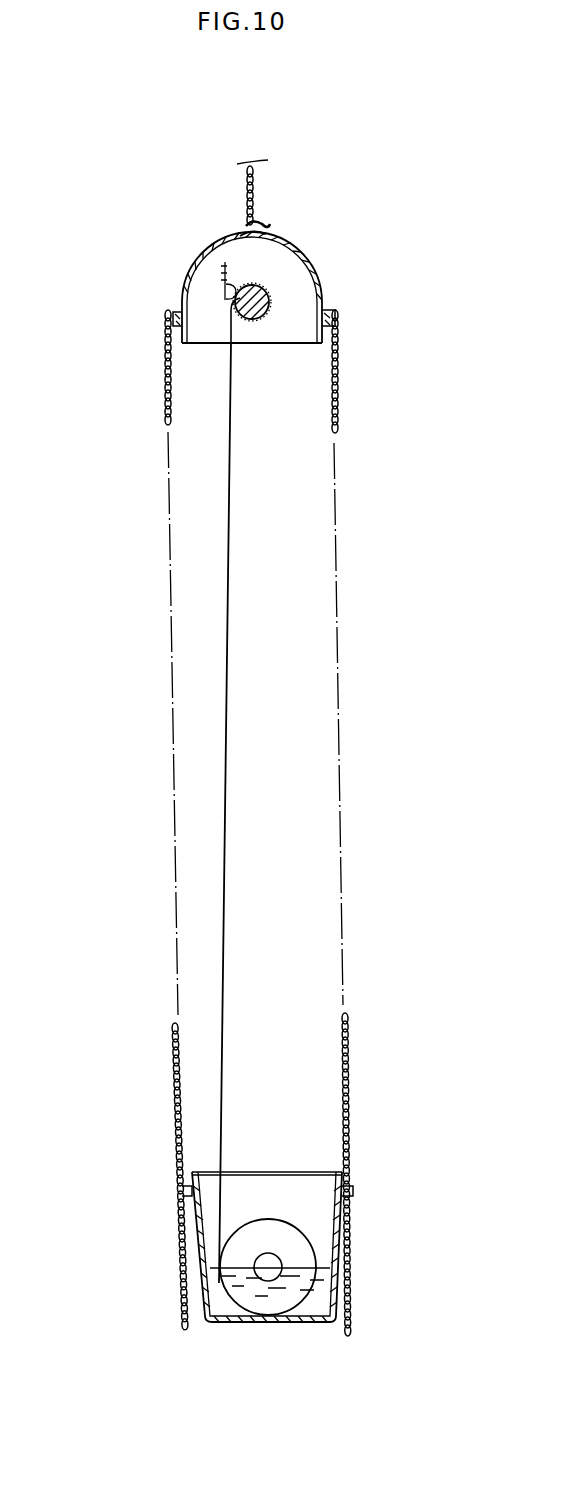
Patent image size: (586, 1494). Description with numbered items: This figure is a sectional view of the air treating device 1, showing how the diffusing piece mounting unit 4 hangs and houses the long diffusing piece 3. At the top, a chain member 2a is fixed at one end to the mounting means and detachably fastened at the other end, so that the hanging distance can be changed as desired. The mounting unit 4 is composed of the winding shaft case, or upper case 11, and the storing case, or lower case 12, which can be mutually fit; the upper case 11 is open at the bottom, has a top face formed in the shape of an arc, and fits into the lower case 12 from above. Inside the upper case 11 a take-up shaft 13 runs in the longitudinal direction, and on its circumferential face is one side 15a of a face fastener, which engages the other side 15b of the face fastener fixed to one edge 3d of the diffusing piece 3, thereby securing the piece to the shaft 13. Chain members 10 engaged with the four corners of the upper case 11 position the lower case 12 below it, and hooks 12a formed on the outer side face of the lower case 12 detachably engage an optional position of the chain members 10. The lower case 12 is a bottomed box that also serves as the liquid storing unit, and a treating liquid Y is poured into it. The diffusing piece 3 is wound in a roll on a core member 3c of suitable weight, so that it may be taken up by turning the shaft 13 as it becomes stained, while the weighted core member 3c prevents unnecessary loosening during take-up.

The air treating device 1 is at (396, 232).
The chain member 2a is at (259, 192).
The diffusing piece 3 is at (224, 728).
The core member 3c is at (268, 1253).
The one edge of the diffusing piece 3d is at (247, 287).
The diffusing piece mounting unit 4 is at (186, 272).
The chain members 10 is at (165, 382).
The winding shaft case (upper case) 11 is at (320, 261).
The storing case (lower case) 12 is at (180, 1212).
The hooks 12a is at (183, 1188).
The take-up shaft 13 is at (269, 297).
The one side of the face fastener 15a is at (263, 320).
The other side of the face fastener 15b is at (224, 300).
The treating liquid Y is at (324, 1272).